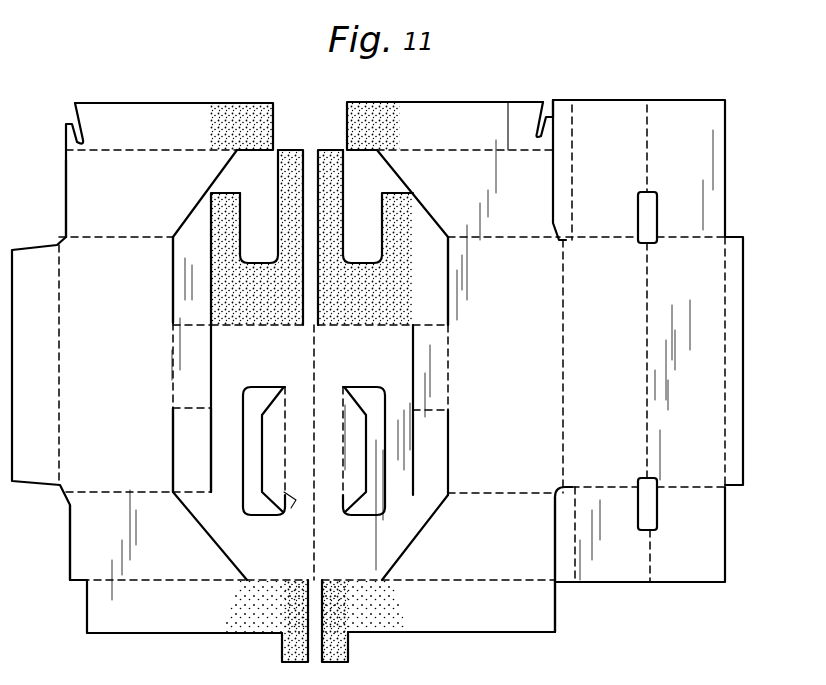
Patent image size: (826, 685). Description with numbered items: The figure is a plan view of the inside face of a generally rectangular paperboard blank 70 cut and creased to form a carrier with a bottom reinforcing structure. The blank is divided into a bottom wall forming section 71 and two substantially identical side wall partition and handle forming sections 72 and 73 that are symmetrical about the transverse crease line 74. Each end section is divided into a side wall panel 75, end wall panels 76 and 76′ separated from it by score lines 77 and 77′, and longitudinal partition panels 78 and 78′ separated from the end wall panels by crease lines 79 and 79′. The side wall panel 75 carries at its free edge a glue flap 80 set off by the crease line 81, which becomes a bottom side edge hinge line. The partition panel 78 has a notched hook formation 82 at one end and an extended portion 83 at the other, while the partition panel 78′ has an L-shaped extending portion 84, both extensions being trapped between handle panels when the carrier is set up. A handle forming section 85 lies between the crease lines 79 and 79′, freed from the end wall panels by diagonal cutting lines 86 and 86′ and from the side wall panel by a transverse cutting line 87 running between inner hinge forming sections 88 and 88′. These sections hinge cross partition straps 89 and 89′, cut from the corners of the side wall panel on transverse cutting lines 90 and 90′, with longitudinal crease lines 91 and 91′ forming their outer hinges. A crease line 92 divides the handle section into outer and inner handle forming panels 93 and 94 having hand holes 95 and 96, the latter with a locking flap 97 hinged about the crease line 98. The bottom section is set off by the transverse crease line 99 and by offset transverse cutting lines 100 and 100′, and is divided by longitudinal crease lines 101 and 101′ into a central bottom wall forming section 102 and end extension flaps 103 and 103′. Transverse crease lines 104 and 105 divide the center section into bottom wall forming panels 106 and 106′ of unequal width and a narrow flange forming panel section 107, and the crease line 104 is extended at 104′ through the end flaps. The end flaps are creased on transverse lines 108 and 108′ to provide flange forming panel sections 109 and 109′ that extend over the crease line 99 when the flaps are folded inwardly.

The notch 70 is at (492, 102).
The bottom wall forming section 71 is at (630, 105).
The side wall partition and handle forming section 72 is at (447, 632).
The side wall partition and handle forming section 73 is at (190, 634).
The transverse crease line 74 is at (315, 362).
The side wall panel 75 is at (308, 312).
The end wall panel 76 is at (309, 193).
The end wall panel 76′ is at (312, 538).
The score line 77 is at (124, 238).
The score line 77′ is at (128, 492).
The longitudinal partition panel 78 is at (309, 126).
The longitudinal partition panel 78′ is at (312, 606).
The crease line 79 is at (147, 150).
The crease line 79′ is at (190, 580).
The glue flap 80 is at (41, 408).
The crease line 81 is at (60, 305).
The notched hook formation 82 is at (66, 124).
The extended portion 83 is at (258, 110).
The L-shaped extending portion 84 is at (268, 620).
The handle forming section 85 is at (247, 204).
The diagonal cutting line 86 is at (203, 200).
The diagonal cutting line 86′ is at (214, 538).
The transverse cutting line 87 is at (212, 362).
The inner hinge forming section 88 is at (201, 232).
The inner hinge forming section 88′ is at (193, 492).
The cross partition strap 89 is at (188, 268).
The cross partition strap 89′ is at (212, 422).
The transverse cutting line 90 is at (172, 290).
The transverse cutting line 90′ is at (173, 423).
The longitudinal crease line 91 is at (172, 366).
The longitudinal crease line 91′ is at (188, 408).
The longitudinal crease line 92 is at (325, 237).
The outer handle forming panel 93 is at (257, 237).
The inner handle forming panel 94 is at (312, 346).
The hand hole 95 is at (278, 222).
The hand hole 96 is at (245, 477).
The locking flap 97 is at (266, 412).
The crease line 98 is at (290, 517).
The transverse crease line 99 is at (565, 340).
The transverse cutting line 100 is at (553, 193).
The transverse cutting line 100′ is at (555, 531).
The longitudinal crease line 101 is at (678, 235).
The longitudinal crease line 101′ is at (684, 487).
The central bottom wall forming section 102 is at (691, 353).
The end extension flap 103 is at (685, 108).
The end extension flap 103′ is at (696, 583).
The transverse crease line 104 is at (650, 280).
The extension of crease line 104′ is at (648, 148).
The transverse crease line 105 is at (725, 313).
The inner bottom wall forming panel 106 is at (602, 326).
The outer bottom wall forming panel 106′ is at (688, 400).
The flange forming panel section 107 is at (741, 240).
The transverse crease line 108 is at (573, 167).
The transverse crease line 108′ is at (577, 535).
The flange forming panel section 109 is at (558, 115).
The flange forming panel section 109′ is at (567, 583).